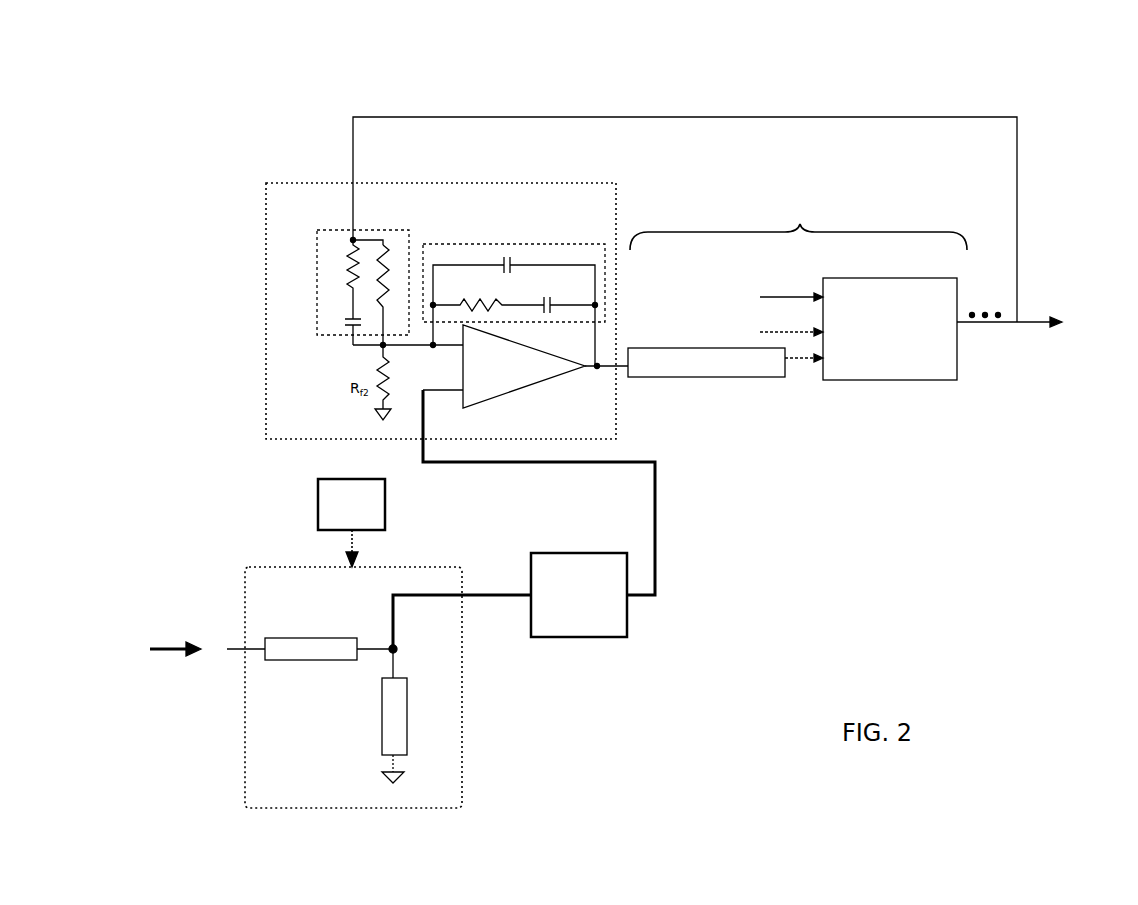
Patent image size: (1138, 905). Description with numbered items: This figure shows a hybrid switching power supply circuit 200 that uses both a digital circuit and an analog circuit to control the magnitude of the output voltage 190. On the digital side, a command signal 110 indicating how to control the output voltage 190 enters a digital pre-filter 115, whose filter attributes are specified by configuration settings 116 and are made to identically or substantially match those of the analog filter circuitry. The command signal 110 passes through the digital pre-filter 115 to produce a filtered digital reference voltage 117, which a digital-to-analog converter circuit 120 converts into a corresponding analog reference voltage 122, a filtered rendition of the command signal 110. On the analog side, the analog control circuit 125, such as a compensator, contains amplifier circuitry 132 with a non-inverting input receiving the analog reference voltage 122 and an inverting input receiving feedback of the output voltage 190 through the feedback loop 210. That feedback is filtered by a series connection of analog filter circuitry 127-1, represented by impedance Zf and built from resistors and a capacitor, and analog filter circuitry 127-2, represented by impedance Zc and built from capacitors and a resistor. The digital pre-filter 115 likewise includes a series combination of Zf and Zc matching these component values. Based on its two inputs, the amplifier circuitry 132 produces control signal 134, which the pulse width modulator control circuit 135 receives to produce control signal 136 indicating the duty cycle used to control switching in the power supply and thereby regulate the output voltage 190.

The analog control circuit 125 is at (265, 290).
The feedback loop 210 is at (745, 112).
The analog filter circuitry 127-1 is at (338, 211).
The analog filter circuitry 127-2 is at (501, 210).
The amplifier circuitry 132 is at (504, 366).
The control signal 134 is at (693, 428).
The pulse width modulator control circuit 135 is at (820, 440).
The control signal 136 is at (948, 462).
The hybrid switching power supply circuit 200 is at (928, 207).
The output voltage 190 is at (1035, 318).
The analog reference voltage 122 is at (707, 589).
The digital-to-analog converter circuit 120 is at (579, 595).
The digital reference voltage 117 is at (525, 657).
The configuration settings 116 is at (351, 523).
The digital pre-filter 115 is at (508, 793).
The command signal 110 is at (177, 643).